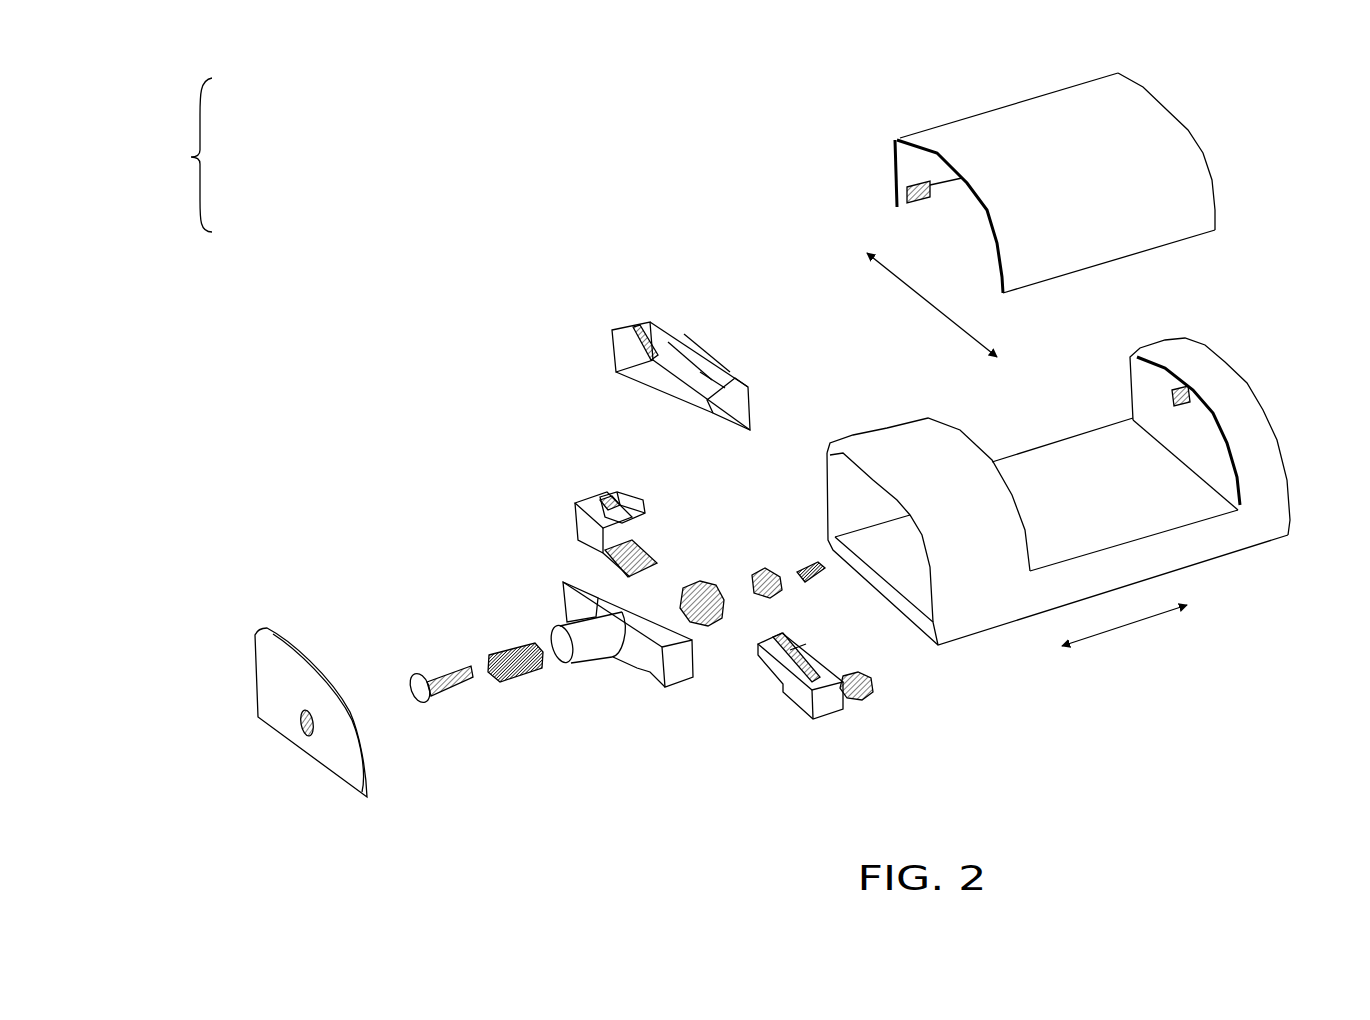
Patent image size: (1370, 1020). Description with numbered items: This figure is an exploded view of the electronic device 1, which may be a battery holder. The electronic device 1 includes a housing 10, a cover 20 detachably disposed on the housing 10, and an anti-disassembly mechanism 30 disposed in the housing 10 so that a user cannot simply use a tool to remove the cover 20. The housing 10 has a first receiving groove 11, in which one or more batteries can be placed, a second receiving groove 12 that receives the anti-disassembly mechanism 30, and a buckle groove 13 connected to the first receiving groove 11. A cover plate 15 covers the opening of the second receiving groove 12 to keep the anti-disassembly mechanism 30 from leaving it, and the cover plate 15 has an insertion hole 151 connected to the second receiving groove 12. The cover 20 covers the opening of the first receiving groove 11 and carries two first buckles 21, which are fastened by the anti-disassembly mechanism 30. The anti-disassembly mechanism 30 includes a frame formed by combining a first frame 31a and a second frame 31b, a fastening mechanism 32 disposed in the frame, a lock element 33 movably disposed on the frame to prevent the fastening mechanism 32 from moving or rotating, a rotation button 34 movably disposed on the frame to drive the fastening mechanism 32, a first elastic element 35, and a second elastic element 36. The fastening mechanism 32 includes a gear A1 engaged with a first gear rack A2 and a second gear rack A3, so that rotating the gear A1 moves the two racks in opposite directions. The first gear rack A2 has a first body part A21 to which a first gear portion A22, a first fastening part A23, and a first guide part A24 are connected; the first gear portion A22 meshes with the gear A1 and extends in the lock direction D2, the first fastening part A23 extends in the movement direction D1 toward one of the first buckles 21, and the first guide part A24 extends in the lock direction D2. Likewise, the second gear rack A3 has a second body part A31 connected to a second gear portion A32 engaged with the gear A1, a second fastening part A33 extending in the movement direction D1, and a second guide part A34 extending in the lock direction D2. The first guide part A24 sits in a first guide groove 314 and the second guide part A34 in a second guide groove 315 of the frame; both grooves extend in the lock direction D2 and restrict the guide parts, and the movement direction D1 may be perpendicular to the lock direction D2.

The electronic device 1 is at (1336, 60).
The housing 10 is at (1247, 367).
The first receiving groove 11 is at (1120, 494).
The second receiving groove 12 is at (881, 564).
The buckle groove 13 is at (1183, 408).
The cover plate 15 is at (250, 645).
The insertion hole 151 is at (308, 732).
The cover 20 is at (1228, 193).
The first buckle 21 is at (908, 192).
The anti-disassembly mechanism 30 is at (470, 398).
The first frame 31a is at (645, 686).
The second frame 31b is at (697, 305).
The first guide groove 314 is at (713, 380).
The second guide groove 315 is at (650, 345).
The fastening mechanism 32 is at (178, 155).
The lock element 33 is at (770, 557).
The rotation button 34 is at (435, 646).
The first elastic element 35 is at (513, 683).
The second elastic element 36 is at (807, 558).
The gear A1 is at (713, 695).
The first gear rack A2 is at (795, 808).
The first body part A21 is at (797, 690).
The first gear portion A22 is at (770, 660).
The first fastening part A23 is at (854, 695).
The first guide part A24 is at (800, 652).
The second gear rack A3 is at (600, 465).
The second body part A31 is at (592, 530).
The second gear portion A32 is at (647, 573).
The second fastening part A33 is at (628, 493).
The second guide part A34 is at (598, 500).
The movement direction D1 is at (1124, 641).
The lock direction D2 is at (932, 305).